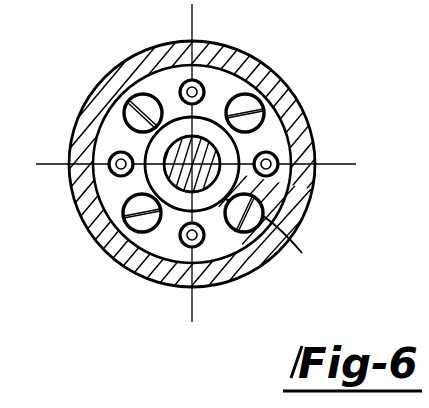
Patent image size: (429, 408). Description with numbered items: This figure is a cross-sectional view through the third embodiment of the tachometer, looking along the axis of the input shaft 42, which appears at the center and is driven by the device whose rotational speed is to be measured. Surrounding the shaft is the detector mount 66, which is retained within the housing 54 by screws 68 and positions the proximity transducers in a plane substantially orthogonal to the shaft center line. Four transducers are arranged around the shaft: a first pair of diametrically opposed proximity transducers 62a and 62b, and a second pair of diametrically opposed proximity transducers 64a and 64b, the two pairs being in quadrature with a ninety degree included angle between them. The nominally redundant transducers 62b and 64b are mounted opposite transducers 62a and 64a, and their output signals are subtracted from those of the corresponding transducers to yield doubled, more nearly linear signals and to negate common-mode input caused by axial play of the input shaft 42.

The input shaft 42 is at (219, 178).
The housing 54 is at (277, 240).
The first proximity transducer 62a is at (275, 156).
The nominally redundant proximity transducer 62b is at (112, 155).
The second proximity transducer 64a is at (199, 82).
The nominally redundant proximity transducer 64b is at (200, 245).
The detector mount 66 is at (88, 186).
The screws 68 is at (131, 99).